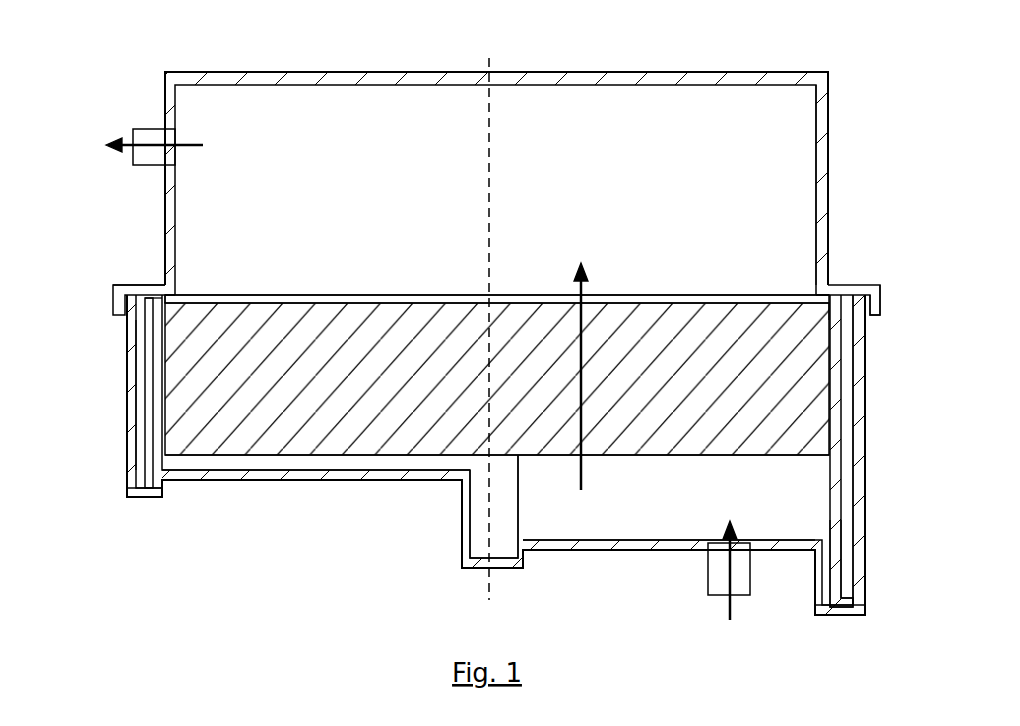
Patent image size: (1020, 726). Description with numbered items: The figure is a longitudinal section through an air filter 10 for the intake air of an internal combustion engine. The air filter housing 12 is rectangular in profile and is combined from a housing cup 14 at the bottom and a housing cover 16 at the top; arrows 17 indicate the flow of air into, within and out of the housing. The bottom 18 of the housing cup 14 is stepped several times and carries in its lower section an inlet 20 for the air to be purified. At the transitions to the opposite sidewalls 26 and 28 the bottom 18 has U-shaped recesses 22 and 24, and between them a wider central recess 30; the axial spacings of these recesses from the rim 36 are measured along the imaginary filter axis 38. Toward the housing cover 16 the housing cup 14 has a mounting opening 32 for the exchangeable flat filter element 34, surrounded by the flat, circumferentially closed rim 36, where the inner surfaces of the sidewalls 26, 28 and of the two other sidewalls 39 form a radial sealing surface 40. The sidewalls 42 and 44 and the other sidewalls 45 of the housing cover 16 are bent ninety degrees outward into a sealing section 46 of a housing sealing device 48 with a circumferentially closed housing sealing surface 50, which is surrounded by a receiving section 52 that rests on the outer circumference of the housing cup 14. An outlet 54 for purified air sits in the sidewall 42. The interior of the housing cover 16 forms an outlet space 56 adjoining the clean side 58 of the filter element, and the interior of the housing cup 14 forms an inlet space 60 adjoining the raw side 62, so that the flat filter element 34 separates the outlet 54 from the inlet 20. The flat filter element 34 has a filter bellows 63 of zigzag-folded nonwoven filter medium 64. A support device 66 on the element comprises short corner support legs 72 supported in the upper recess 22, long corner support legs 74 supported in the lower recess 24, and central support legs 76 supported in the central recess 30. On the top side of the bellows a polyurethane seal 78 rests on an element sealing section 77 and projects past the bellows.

The air filter 10 is at (160, 63).
The air filter housing 12 is at (835, 72).
The housing cup 14 is at (118, 438).
The housing cover 16 is at (835, 116).
The arrows 17 is at (106, 140).
The bottom 18 is at (300, 482).
The inlet 20 is at (708, 578).
The recess 22 is at (150, 500).
The recess 24 is at (825, 612).
The sidewall 26 is at (133, 392).
The sidewall 28 is at (865, 500).
The central recess 30 is at (468, 566).
The mounting opening 32 is at (445, 298).
The flat filter element 34 is at (335, 298).
The rim 36 is at (113, 292).
The filter axis 38 is at (487, 148).
The sidewall 39 is at (575, 550).
The radial sealing surface 40 is at (138, 320).
The sidewall 42 is at (168, 205).
The sidewall 44 is at (822, 135).
The sidewall 45 is at (615, 110).
The sealing section 46 is at (140, 290).
The housing sealing device 48 is at (186, 291).
The housing sealing surface 50 is at (848, 296).
The receiving section 52 is at (880, 310).
The outlet 54 is at (150, 135).
The outlet space 56 is at (264, 115).
The clean side 58 is at (700, 298).
The inlet space 60 is at (624, 505).
The raw side 62 is at (745, 458).
The filter bellows 63 is at (400, 330).
The filter medium 64 is at (548, 322).
The support device 66 is at (852, 422).
The corner support legs 72 is at (150, 470).
The corner support legs 74 is at (845, 560).
The central support legs 76 is at (500, 525).
The element sealing section 77 is at (808, 324).
The seal 78 is at (806, 296).